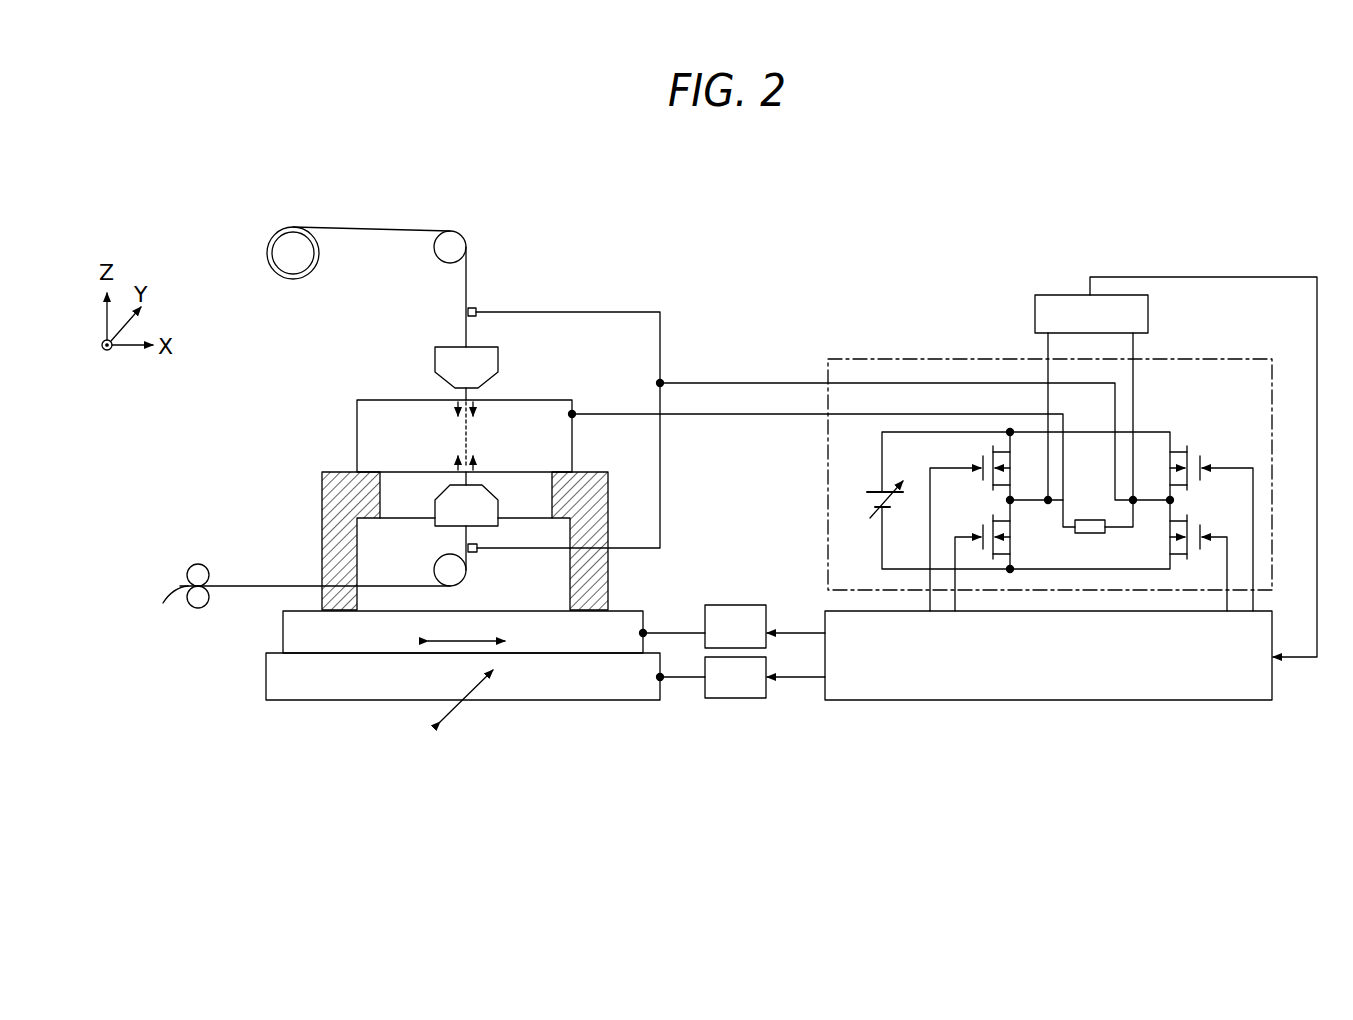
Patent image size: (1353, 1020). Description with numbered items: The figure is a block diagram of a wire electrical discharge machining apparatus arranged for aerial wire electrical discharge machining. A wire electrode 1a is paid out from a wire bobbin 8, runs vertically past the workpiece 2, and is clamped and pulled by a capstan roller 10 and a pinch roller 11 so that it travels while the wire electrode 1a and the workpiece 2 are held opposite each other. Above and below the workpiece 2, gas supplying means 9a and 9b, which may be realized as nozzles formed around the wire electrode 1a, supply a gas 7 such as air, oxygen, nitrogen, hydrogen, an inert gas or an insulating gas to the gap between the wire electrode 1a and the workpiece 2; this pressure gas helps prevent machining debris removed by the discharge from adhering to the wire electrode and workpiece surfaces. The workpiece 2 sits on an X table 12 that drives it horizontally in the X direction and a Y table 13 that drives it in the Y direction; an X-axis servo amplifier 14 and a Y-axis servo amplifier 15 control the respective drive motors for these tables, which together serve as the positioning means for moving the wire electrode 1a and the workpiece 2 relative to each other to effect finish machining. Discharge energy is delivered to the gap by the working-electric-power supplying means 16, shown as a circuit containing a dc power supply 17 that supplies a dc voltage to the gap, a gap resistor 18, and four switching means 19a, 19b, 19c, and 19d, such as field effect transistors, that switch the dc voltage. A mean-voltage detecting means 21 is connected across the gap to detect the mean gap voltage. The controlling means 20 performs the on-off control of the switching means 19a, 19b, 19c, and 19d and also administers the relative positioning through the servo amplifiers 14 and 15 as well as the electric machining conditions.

The wire electrode 1a is at (467, 283).
The workpiece 2 is at (357, 440).
The gas 7 is at (476, 394).
The wire bobbin 8 is at (293, 279).
The gas supplying means 9a is at (435, 363).
The gas supplying means 9b is at (435, 514).
The capstan roller 10 is at (192, 606).
The pinch roller 11 is at (200, 563).
The X table 12 is at (283, 636).
The Y table 13 is at (266, 679).
The X-axis servo amplifier 14 is at (735, 605).
The Y-axis servo amplifier 15 is at (735, 698).
The working-electric-power supplying means 16 is at (1222, 358).
The dc power supply 17 is at (875, 477).
The gap resistor 18 is at (1090, 520).
The switching means 19a is at (986, 456).
The switching means 19b is at (1225, 508).
The switching means 19c is at (990, 522).
The switching means 19d is at (1225, 445).
The controlling means 20 is at (1053, 700).
The mean-voltage detecting means 21 is at (1035, 317).